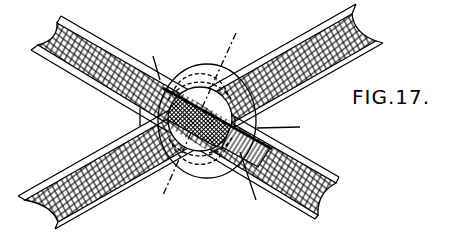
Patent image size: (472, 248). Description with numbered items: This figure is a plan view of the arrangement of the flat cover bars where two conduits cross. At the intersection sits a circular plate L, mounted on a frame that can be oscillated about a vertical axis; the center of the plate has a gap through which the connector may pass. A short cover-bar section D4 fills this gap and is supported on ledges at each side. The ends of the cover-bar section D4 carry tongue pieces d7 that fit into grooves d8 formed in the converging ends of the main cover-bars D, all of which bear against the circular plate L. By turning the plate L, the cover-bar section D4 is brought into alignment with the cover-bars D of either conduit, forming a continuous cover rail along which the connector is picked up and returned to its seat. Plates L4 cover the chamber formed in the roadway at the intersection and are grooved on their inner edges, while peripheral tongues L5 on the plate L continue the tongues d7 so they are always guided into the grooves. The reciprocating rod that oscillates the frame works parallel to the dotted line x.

The cover-bar D is at (200, 116).
The cover-bar section D4 is at (205, 126).
The circular plate L is at (212, 93).
The plates L4 is at (276, 110).
The peripheral tongues L5 is at (212, 150).
The tongue pieces d7 is at (140, 112).
The grooves d8 is at (209, 130).
The dotted line x x is at (199, 116).